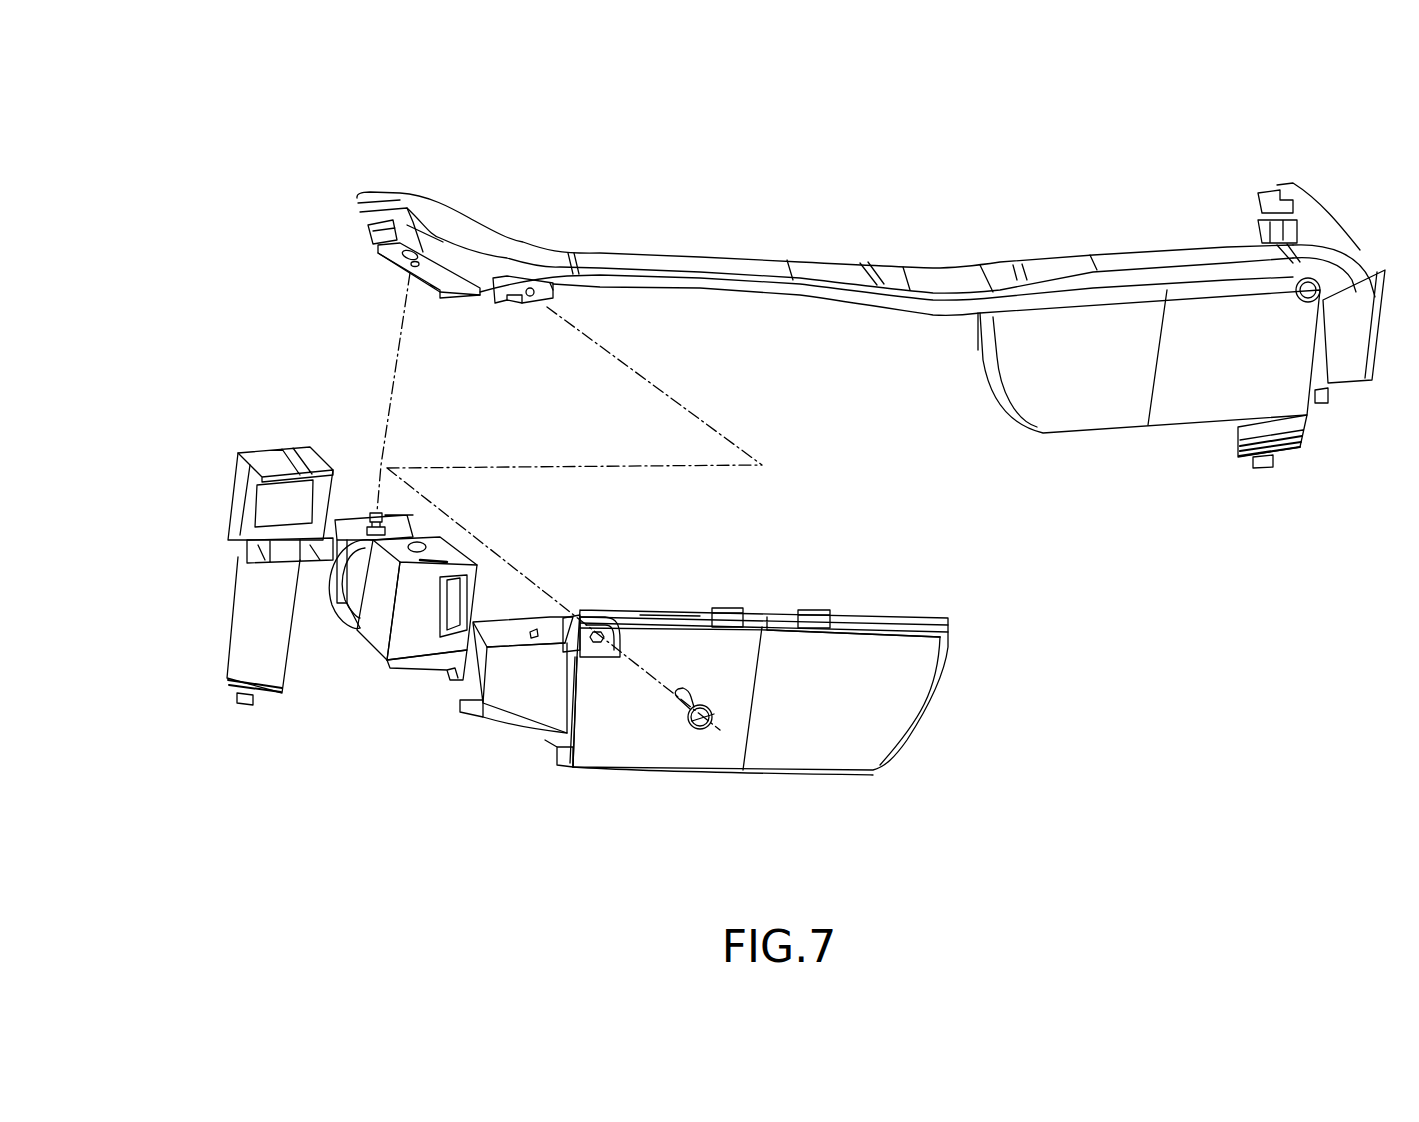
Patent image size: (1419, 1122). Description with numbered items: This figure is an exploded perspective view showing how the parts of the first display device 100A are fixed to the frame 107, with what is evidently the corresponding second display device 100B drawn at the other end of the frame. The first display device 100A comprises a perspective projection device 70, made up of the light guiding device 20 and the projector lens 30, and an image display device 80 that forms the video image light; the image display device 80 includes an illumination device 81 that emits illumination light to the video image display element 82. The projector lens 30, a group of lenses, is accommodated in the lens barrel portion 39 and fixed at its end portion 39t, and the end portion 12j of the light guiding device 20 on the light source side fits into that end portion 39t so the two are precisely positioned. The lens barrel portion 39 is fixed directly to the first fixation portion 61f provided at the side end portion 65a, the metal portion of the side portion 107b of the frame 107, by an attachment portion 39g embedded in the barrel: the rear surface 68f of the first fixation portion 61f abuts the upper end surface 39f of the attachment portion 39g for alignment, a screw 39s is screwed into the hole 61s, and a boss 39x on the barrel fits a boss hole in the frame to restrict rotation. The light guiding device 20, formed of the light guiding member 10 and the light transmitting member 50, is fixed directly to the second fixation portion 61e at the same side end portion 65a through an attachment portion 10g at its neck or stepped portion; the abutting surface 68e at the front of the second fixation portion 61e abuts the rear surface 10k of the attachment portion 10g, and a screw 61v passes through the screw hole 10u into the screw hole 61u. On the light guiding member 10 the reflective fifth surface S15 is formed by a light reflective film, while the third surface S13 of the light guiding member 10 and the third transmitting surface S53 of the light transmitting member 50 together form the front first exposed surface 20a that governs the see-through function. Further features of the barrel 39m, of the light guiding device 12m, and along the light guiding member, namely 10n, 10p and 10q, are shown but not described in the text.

The frame 107 is at (705, 257).
The side portion 107b is at (428, 227).
The side end portion 65a is at (536, 258).
The first fixation portion 61f is at (372, 224).
The rear surface 68f is at (380, 262).
The hole 61s is at (415, 256).
The abutting surface 68e is at (522, 303).
The second fixation portion 61e is at (540, 300).
The screw hole 61u is at (537, 290).
The second display unit 100B is at (1125, 215).
The first display device 100A is at (808, 470).
The image display device 80 is at (237, 380).
The illumination device 81 is at (283, 450).
The video image display element 82 is at (245, 500).
The projector lens 30 is at (407, 615).
The lens barrel portion 39 is at (420, 532).
The screw 39s is at (375, 513).
The upper end surface 39f is at (363, 523).
The boss 39x is at (428, 548).
The attachment portion 39g is at (345, 614).
The end portion 39t is at (378, 632).
The bracket 39m is at (425, 654).
The perspective projection device 70 is at (377, 682).
The end portion 12j is at (470, 704).
The top plate 12m is at (520, 620).
The fifth surface S15 is at (510, 714).
The light guiding member 10 is at (648, 655).
The rear surface 10k is at (582, 616).
The attachment portion 10g is at (600, 635).
The rail portion 10p is at (690, 617).
The tab 10q is at (727, 612).
The upper edge 10n is at (810, 550).
The light guiding device 20 is at (677, 590).
The screw hole 10u is at (570, 662).
The screw 61v is at (680, 719).
The third surface S13 is at (690, 752).
The third transmitting surface S53 is at (770, 749).
The light transmitting member 50 is at (815, 729).
The first exposed surface 20a is at (665, 848).